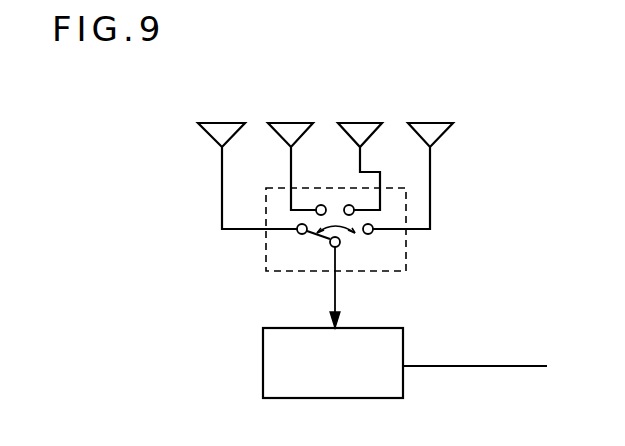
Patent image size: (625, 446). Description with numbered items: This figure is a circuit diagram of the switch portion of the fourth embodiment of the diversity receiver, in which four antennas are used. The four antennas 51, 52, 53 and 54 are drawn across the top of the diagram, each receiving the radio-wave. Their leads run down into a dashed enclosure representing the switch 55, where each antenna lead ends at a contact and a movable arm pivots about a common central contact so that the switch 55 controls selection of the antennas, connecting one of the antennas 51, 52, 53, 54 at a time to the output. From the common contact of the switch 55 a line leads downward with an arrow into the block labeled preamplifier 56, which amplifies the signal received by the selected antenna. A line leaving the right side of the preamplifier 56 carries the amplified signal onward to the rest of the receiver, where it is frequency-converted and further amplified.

The antenna 51 is at (223, 122).
The antenna 52 is at (292, 122).
The antenna 53 is at (361, 122).
The antenna 54 is at (431, 122).
The switch 55 is at (407, 264).
The preamplifier 56 is at (404, 345).